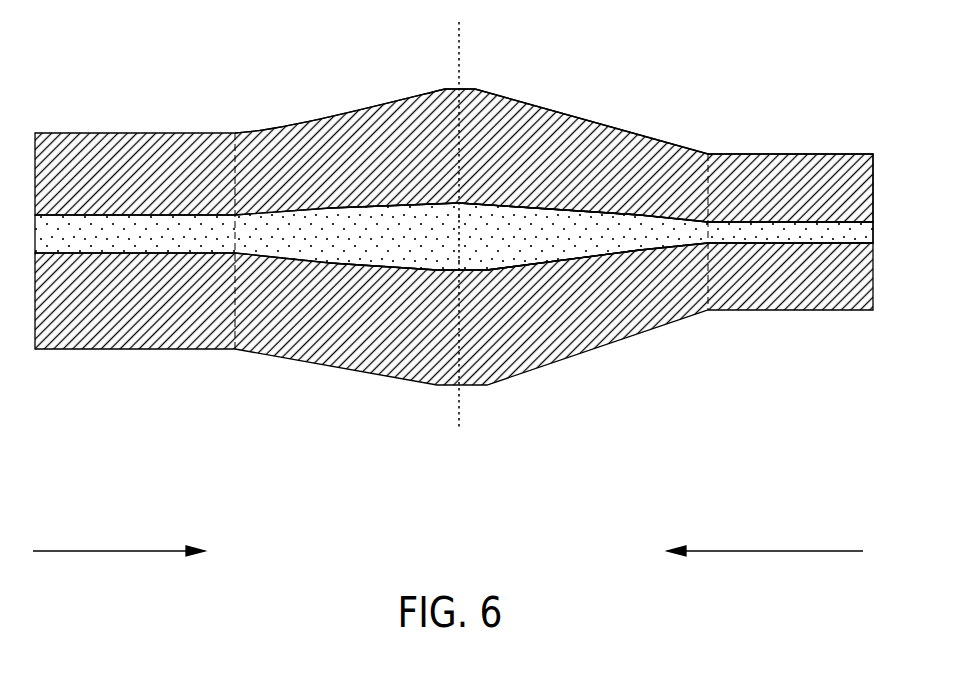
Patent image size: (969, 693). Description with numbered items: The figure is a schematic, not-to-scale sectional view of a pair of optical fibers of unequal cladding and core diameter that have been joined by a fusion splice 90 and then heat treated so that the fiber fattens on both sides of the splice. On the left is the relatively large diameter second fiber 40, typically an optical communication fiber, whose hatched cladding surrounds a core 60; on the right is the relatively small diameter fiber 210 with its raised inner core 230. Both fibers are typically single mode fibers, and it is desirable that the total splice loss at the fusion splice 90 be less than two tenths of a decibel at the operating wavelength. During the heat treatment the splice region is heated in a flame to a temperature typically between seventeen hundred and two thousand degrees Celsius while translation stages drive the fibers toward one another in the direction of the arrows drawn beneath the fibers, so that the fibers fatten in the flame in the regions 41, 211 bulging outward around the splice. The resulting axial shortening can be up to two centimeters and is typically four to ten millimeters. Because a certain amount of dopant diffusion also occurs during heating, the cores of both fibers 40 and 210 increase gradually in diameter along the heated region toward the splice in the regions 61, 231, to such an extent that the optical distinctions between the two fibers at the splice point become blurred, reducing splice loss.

The second fiber 40 is at (205, 133).
The fattened region of second fiber 41 is at (334, 112).
The core of second fiber 60 is at (160, 243).
The enlarged core region of second fiber 61 is at (377, 248).
The fusion splice 90 is at (464, 44).
The small diameter fiber 210 is at (768, 154).
The fattened region of small diameter fiber 211 is at (623, 133).
The raised inner core of small diameter fiber 230 is at (755, 231).
The enlarged core region of small diameter fiber 231 is at (537, 240).